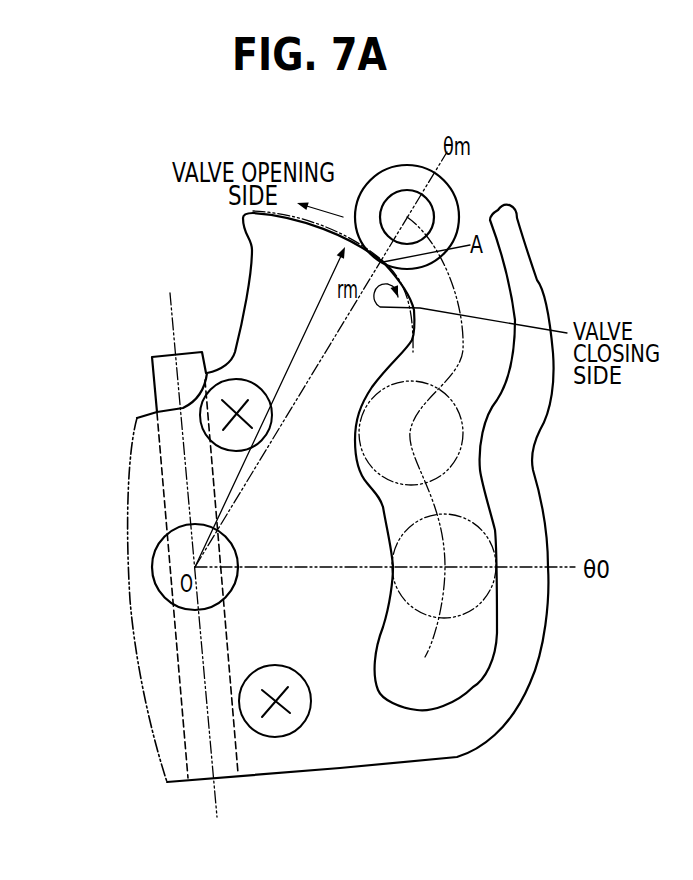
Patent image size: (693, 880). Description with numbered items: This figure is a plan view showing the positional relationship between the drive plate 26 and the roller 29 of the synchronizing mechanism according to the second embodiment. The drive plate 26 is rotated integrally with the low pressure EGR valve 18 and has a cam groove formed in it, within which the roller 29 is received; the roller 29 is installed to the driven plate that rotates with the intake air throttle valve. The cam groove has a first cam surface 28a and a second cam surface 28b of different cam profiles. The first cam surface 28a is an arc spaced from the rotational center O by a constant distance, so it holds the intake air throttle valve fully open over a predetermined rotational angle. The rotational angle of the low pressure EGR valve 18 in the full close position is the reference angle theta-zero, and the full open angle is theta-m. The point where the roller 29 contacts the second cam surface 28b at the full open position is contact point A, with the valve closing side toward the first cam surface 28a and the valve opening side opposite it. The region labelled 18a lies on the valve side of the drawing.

The low pressure EGR valve 18 is at (165, 370).
The valve stem end portion 18a is at (163, 575).
The drive plate 26 is at (355, 743).
The first cam surface 28a is at (385, 506).
The second cam surface 28b is at (413, 292).
The roller 29 is at (373, 190).